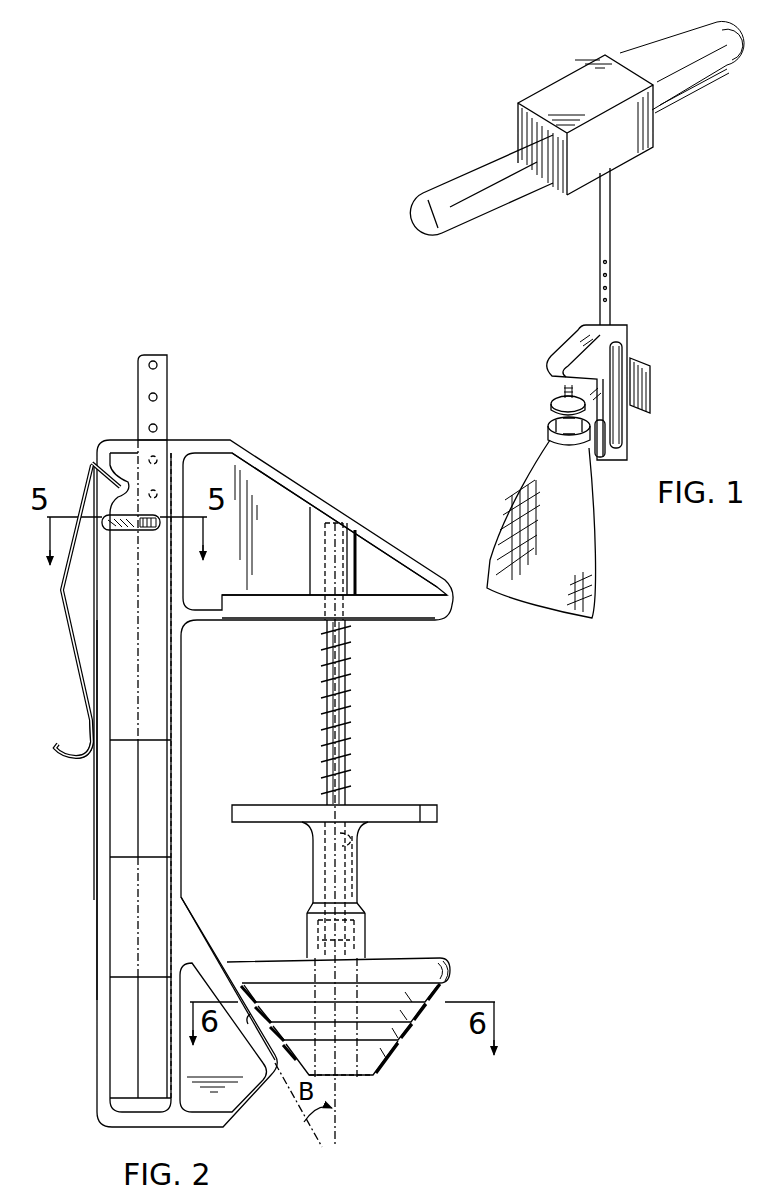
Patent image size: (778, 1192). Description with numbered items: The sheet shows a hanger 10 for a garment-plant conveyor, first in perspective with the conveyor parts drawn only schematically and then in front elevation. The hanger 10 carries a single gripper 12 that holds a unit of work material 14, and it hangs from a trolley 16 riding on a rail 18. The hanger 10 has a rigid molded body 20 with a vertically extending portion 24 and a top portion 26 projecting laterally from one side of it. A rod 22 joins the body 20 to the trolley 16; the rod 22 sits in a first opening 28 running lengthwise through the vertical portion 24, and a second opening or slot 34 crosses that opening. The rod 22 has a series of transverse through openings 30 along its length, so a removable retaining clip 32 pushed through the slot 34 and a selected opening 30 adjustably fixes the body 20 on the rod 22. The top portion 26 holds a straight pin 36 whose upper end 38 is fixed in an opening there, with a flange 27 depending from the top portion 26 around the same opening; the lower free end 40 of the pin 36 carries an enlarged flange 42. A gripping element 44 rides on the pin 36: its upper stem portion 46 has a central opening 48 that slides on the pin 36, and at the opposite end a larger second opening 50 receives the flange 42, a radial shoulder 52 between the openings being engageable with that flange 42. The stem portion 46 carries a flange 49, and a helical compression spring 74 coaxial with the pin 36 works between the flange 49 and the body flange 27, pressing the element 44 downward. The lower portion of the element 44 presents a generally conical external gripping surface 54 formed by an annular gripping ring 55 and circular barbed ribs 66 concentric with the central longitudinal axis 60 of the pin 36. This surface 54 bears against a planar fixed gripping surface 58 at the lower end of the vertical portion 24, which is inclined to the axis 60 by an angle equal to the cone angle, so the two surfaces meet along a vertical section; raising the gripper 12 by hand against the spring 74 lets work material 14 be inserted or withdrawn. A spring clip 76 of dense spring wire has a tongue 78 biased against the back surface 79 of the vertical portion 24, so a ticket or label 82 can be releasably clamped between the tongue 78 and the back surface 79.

In FIG. 1, the hanger 10 is at (692, 313).
In FIG. 2, the hanger 10 is at (343, 452).
In FIG. 1, the gripper 12 is at (546, 421).
In FIG. 2, the gripper 12 is at (463, 938).
In FIG. 1, the unit of work material 14 is at (583, 566).
In FIG. 1, the trolley 16 is at (571, 90).
In FIG. 1, the rail 18 is at (675, 62).
In FIG. 1, the body 20 is at (618, 328).
In FIG. 2, the body 20 is at (96, 818).
In FIG. 1, the rod 22 is at (611, 183).
In FIG. 2, the rod 22 is at (134, 410).
In FIG. 2, the vertically extending portion 24 is at (182, 690).
In FIG. 2, the top portion 26 is at (293, 482).
In FIG. 2, the flange 27 is at (388, 595).
In FIG. 2, the first opening 28 is at (146, 443).
In FIG. 1, the transverse through openings 30 is at (607, 282).
In FIG. 2, the transverse through openings 30 is at (158, 397).
In FIG. 2, the retaining clip 32 is at (152, 531).
In FIG. 2, the second opening or slot 34 is at (118, 531).
In FIG. 2, the straight pin 36 is at (349, 654).
In FIG. 2, the upper end 38 is at (323, 548).
In FIG. 2, the lower free end 40 is at (366, 937).
In FIG. 2, the enlarged flange 42 is at (310, 923).
In FIG. 2, the gripping element 44 is at (418, 959).
In FIG. 2, the upper stem portion 46 is at (358, 857).
In FIG. 2, the central opening 48 is at (358, 843).
In FIG. 2, the flange 49 is at (280, 805).
In FIG. 2, the second opening 50 is at (353, 1073).
In FIG. 2, the radial shoulder 52 is at (367, 912).
In FIG. 2, the conical external gripping surface 54 is at (413, 1032).
In FIG. 2, the annular gripping ring 55 is at (447, 978).
In FIG. 2, the fixed gripping surface 58 is at (213, 958).
In FIG. 2, the central longitudinal axis 60 is at (340, 1117).
In FIG. 2, the circular barbed shaped ribs 66 is at (247, 1018).
In FIG. 2, the spring 74 is at (350, 688).
In FIG. 2, the spring clip 76 is at (63, 628).
In FIG. 2, the tongue 78 is at (74, 668).
In FIG. 2, the back surface 79 is at (97, 584).
In FIG. 1, the ticket or label 82 is at (651, 392).